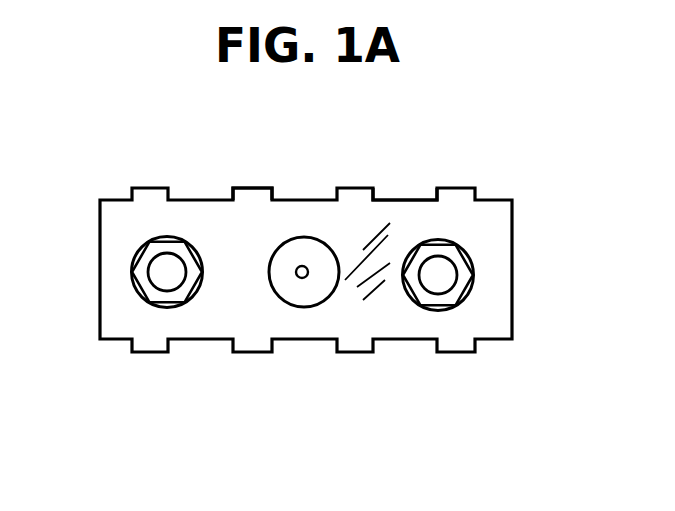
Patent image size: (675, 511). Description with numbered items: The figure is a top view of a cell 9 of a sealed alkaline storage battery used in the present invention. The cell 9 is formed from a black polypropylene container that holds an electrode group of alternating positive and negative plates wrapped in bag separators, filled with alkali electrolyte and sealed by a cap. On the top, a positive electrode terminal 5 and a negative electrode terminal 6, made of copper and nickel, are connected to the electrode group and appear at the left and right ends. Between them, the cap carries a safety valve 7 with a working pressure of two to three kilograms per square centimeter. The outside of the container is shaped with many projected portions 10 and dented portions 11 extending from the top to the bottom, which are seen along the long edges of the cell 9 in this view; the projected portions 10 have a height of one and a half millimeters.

The positive electrode terminal 5 is at (143, 262).
The negative electrode terminal 6 is at (462, 288).
The safety valve 7 is at (305, 247).
The cell 9 is at (497, 242).
The projected portions 10 is at (373, 188).
The dented portions 11 is at (202, 200).